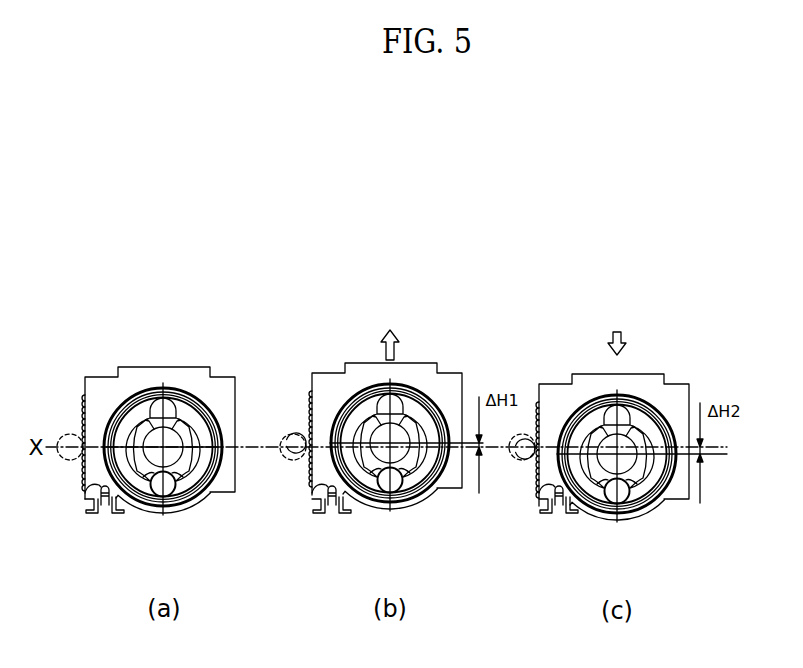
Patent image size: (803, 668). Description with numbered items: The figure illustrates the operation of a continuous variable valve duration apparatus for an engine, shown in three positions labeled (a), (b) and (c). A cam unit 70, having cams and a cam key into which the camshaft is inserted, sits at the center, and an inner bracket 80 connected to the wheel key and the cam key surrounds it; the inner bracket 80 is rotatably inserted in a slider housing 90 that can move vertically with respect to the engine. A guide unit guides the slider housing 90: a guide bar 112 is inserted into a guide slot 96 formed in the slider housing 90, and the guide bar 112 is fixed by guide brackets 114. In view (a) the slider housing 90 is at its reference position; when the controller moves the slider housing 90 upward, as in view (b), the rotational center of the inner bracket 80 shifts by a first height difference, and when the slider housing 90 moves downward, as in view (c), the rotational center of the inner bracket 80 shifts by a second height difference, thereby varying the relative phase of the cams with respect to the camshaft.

The cam unit 70 is at (188, 438).
The inner bracket 80 is at (195, 495).
The slider housing 90 is at (213, 367).
The guide slot 96 is at (86, 493).
The guide bar 112 is at (108, 492).
The guide bracket 114 is at (120, 513).